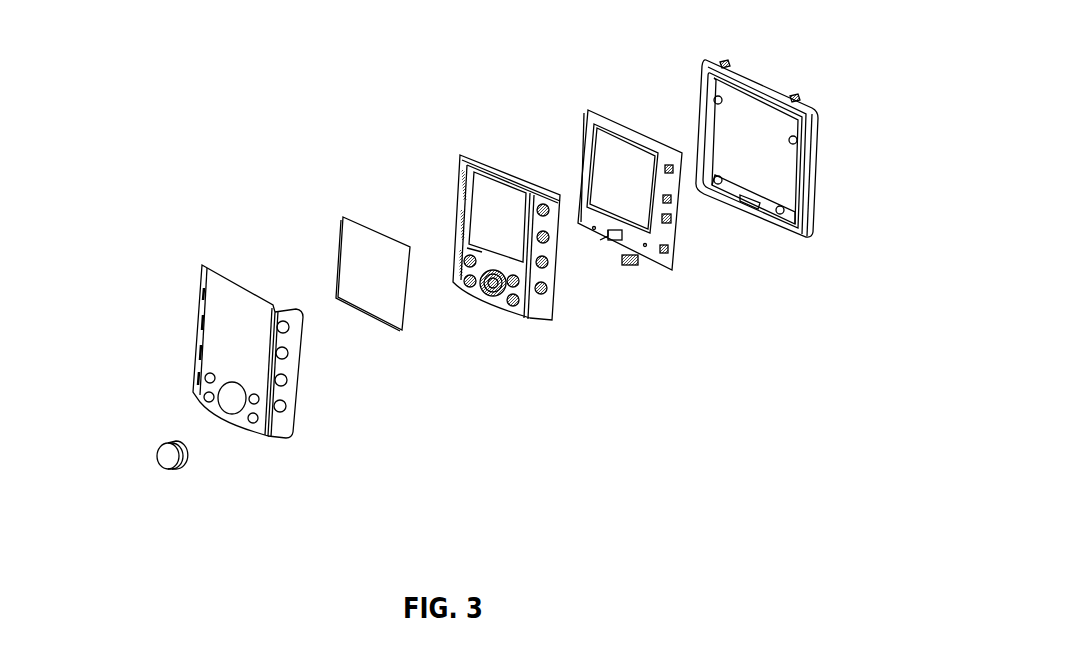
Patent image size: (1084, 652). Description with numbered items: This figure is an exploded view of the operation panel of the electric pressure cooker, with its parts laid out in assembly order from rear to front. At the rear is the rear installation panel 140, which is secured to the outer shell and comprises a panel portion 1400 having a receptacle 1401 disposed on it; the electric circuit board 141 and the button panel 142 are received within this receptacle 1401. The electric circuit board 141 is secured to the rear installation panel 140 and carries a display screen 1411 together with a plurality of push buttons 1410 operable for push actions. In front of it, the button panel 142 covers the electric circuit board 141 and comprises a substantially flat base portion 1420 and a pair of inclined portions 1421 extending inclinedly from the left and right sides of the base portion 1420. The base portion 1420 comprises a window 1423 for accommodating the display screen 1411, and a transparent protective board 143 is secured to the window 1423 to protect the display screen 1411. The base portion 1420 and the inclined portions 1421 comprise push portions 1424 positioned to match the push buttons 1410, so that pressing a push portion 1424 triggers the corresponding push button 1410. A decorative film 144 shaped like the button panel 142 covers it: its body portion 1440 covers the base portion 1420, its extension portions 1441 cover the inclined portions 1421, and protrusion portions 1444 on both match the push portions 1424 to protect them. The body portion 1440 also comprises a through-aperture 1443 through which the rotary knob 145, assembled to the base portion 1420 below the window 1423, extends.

The rear installation panel 140 is at (827, 133).
The panel portion 1400 is at (811, 143).
The receptacle 1401 is at (783, 183).
The electric circuit board 141 is at (709, 165).
The push buttons 1410 is at (667, 219).
The display screen 1411 is at (613, 155).
The button panel 142 is at (530, 245).
The base portion 1420 is at (465, 288).
The inclined portions 1421 is at (553, 292).
The window 1423 is at (490, 192).
The push portions 1424 is at (511, 306).
The transparent protective board 143 is at (366, 231).
The decorative film 144 is at (254, 380).
The body portion 1440 is at (227, 298).
The extension portions 1441 is at (290, 390).
The through-aperture 1443 is at (238, 405).
The protrusion portions 1444 is at (255, 422).
The rotary knob 145 is at (158, 447).